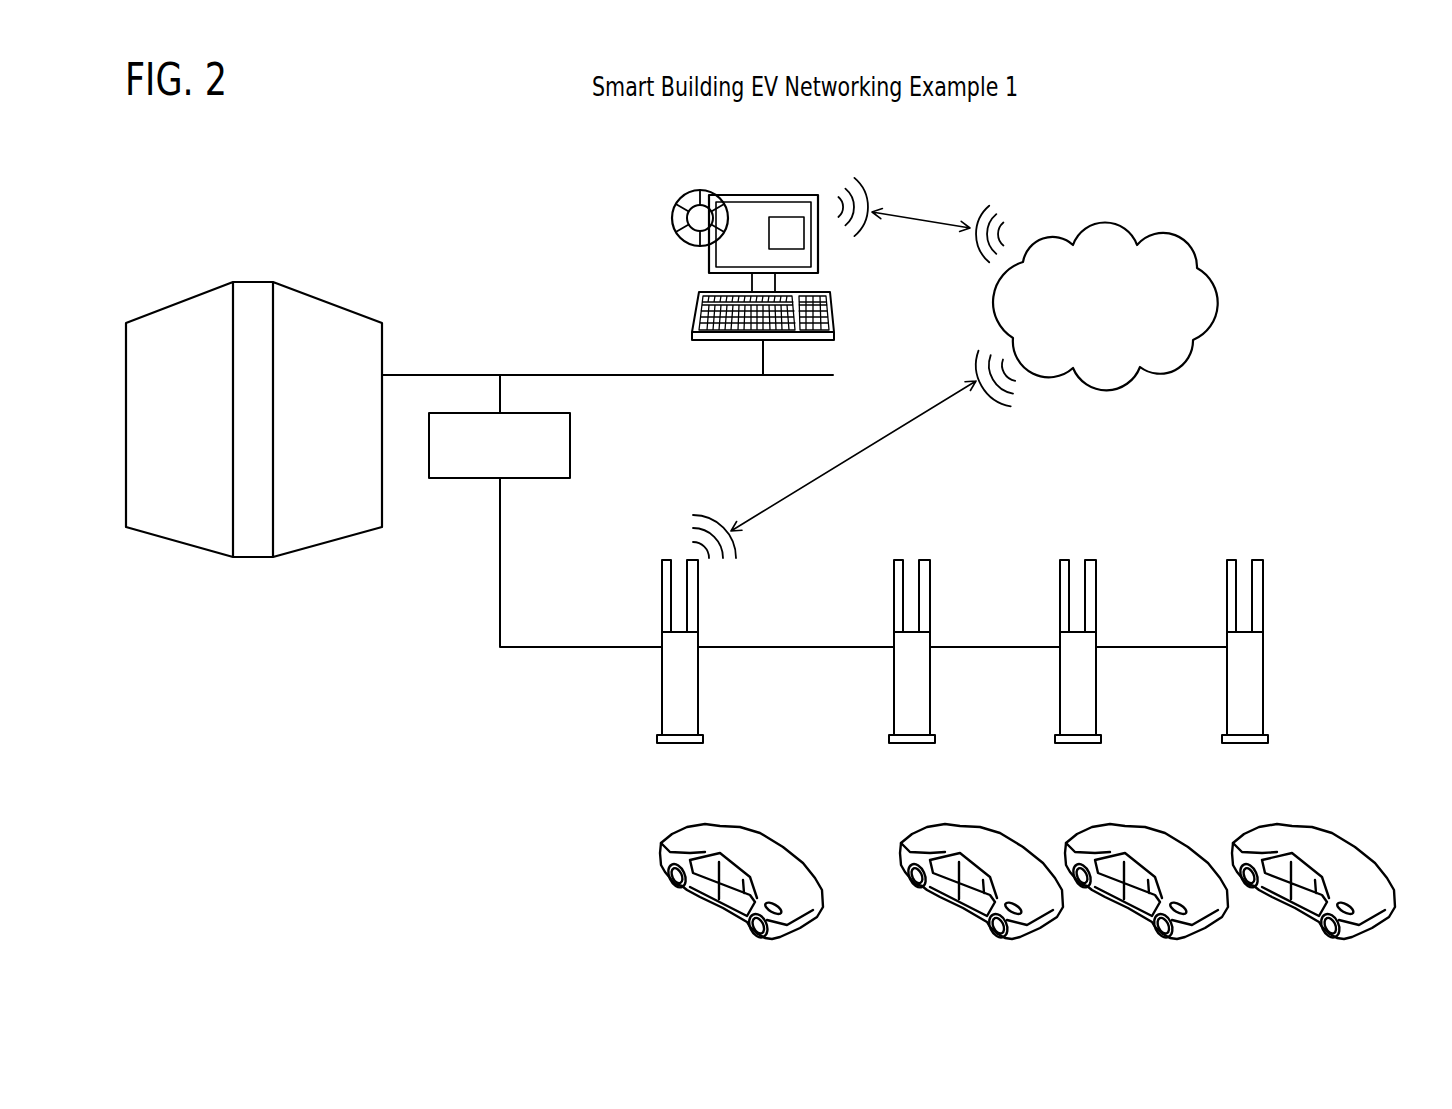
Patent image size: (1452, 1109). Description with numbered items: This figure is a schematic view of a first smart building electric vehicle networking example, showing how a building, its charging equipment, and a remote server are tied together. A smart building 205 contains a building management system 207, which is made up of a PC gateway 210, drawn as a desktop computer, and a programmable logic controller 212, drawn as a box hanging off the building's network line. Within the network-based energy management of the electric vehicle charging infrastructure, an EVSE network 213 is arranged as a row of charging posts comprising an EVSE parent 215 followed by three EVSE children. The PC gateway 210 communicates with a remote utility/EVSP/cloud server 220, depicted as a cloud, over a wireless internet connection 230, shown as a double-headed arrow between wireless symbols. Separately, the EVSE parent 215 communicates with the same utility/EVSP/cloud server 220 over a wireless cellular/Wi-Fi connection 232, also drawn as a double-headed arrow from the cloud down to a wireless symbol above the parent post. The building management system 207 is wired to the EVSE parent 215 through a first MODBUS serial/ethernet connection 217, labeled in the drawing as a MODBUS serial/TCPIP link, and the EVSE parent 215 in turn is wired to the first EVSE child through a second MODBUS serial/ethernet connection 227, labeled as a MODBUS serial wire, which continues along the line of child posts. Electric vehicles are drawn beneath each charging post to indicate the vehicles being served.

The smart building 205 is at (345, 429).
The building management system 207 is at (734, 173).
The PC gateway 210 is at (818, 253).
The programmable logic controller (PLC) 212 is at (518, 460).
The EVSE network 213 is at (1322, 695).
The EVSE parent 215 is at (662, 692).
The first MODBUS 485 serial/ethernet connection 217 is at (500, 543).
The utility/EVSP/cloud server 220 is at (1222, 277).
The second MODBUS 485 serial/ethernet connection 227 is at (748, 648).
The wireless internet connection 230 is at (922, 217).
The wireless cellular/Wi-Fi connection 232 is at (853, 453).